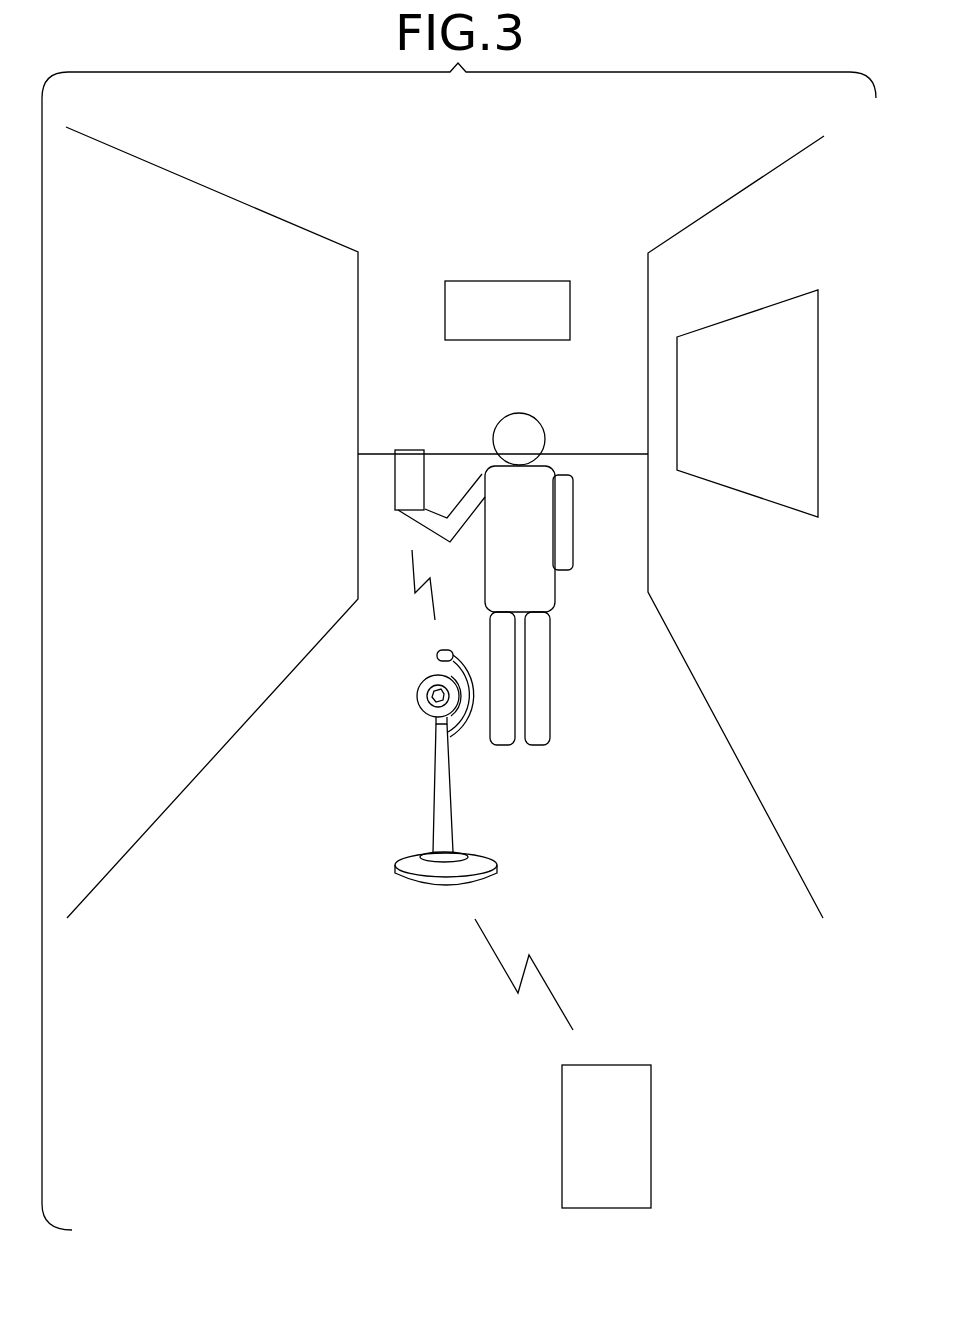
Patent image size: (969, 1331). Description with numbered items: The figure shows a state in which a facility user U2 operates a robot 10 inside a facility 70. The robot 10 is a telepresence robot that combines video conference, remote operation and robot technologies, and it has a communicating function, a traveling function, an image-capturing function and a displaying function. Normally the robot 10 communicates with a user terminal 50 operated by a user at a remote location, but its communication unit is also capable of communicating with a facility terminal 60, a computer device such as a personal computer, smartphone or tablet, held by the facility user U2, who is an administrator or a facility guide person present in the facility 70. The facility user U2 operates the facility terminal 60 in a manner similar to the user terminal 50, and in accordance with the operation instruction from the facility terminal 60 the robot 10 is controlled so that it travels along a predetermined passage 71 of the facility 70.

The robot 10 is at (455, 812).
The user terminal 50 is at (653, 1115).
The facility terminal 60 is at (410, 448).
The facility 70 is at (657, 165).
The passage 71 is at (642, 683).
The facility user U2 is at (548, 465).